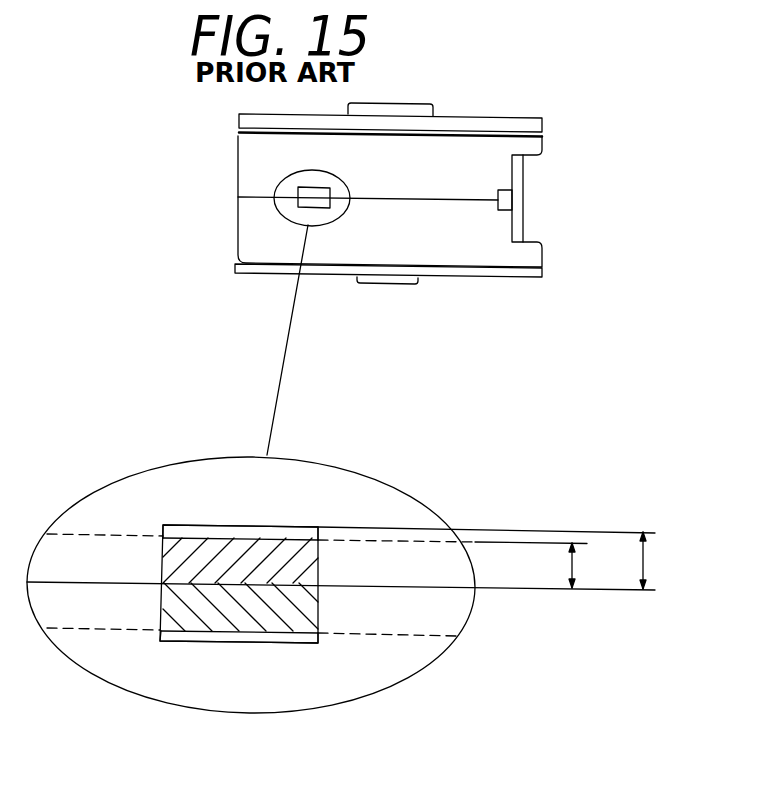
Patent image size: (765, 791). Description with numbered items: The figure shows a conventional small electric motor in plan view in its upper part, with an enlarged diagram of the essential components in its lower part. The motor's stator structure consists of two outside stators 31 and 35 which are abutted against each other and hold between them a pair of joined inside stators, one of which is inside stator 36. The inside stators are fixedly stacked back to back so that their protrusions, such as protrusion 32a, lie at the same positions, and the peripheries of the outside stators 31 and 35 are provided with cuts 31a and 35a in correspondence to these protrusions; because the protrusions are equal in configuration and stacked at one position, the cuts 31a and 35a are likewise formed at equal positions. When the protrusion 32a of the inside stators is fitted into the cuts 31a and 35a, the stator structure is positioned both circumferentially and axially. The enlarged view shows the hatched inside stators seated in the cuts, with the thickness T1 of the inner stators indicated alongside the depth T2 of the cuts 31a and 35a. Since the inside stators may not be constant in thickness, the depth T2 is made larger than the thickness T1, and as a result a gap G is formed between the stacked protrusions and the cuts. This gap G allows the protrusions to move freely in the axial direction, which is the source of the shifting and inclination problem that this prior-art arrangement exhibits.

The outside stator 31 is at (505, 151).
The outside stator 35 is at (500, 256).
The cut 31a is at (183, 525).
The protrusion 32a is at (295, 553).
The cut 35a is at (233, 645).
The inside stator 36 is at (308, 615).
The gap G is at (283, 535).
The thickness of the inner stators T1 is at (541, 565).
The depth of the cuts T2 is at (660, 560).